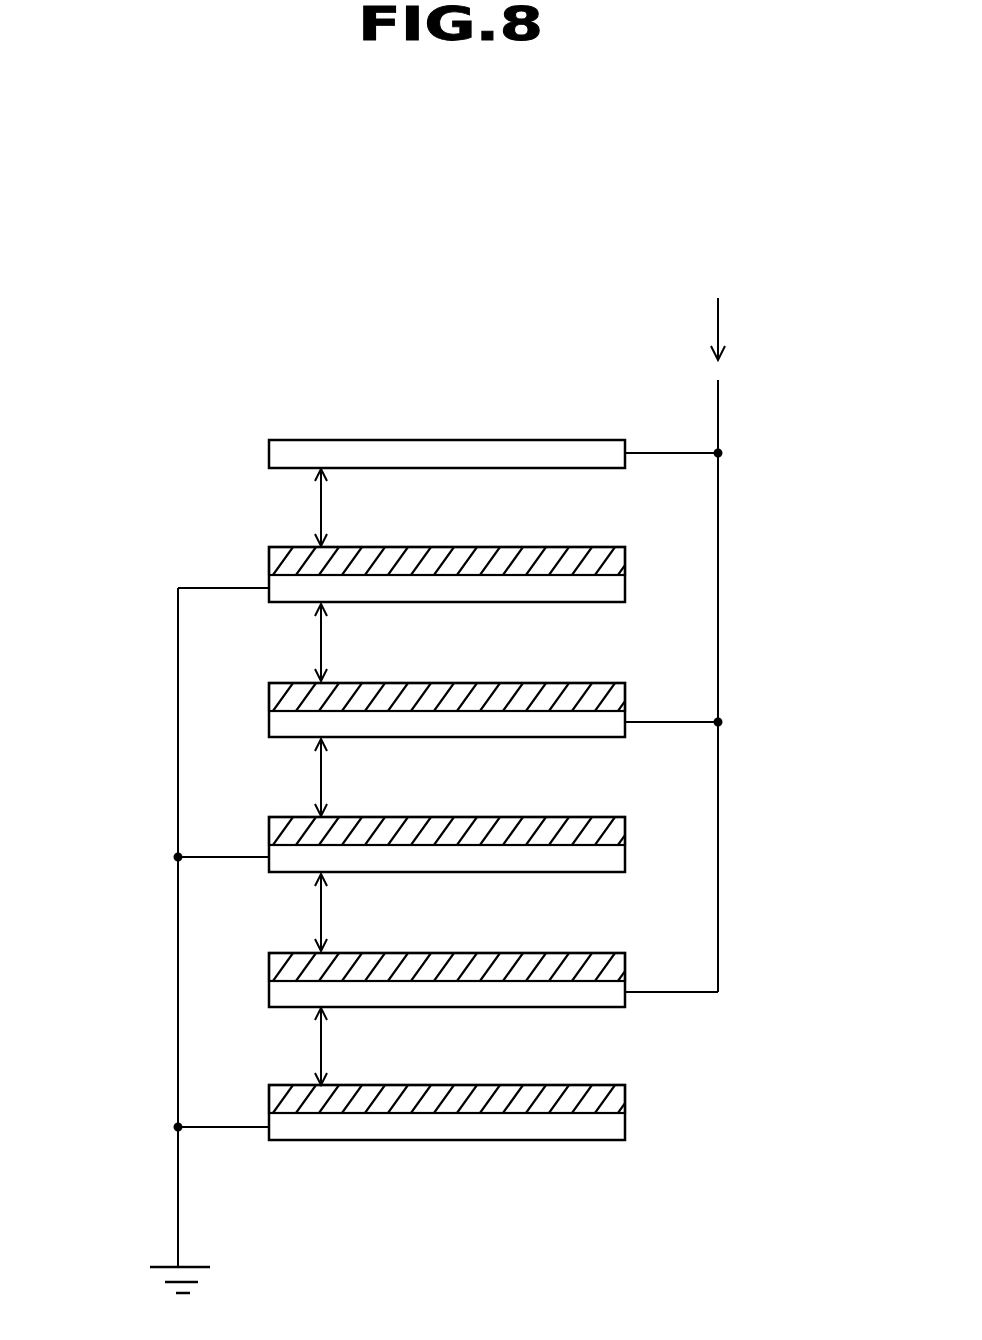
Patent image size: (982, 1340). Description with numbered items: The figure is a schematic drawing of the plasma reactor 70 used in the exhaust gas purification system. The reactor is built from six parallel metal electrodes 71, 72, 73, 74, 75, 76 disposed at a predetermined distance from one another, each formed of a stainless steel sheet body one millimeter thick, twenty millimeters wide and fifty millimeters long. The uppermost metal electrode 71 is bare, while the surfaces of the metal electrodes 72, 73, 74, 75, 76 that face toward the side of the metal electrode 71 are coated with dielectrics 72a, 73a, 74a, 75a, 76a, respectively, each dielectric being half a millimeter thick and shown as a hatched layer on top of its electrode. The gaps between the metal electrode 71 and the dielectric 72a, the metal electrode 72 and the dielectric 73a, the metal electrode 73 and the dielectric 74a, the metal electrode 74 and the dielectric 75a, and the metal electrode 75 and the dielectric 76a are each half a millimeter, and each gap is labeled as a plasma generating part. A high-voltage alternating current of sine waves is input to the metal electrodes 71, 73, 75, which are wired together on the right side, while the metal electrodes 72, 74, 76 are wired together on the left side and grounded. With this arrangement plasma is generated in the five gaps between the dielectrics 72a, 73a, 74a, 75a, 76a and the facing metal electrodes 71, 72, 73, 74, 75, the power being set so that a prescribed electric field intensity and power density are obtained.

The plasma reactor 70 is at (170, 368).
The metal electrode 71 is at (592, 448).
The metal electrode 72 is at (453, 560).
The dielectric 72a is at (283, 553).
The metal electrode 73 is at (453, 695).
The dielectric 73a is at (283, 689).
The metal electrode 74 is at (453, 829).
The dielectric 74a is at (283, 823).
The metal electrode 75 is at (453, 964).
The dielectric 75a is at (283, 959).
The metal electrode 76 is at (453, 1098).
The dielectric 76a is at (283, 1091).